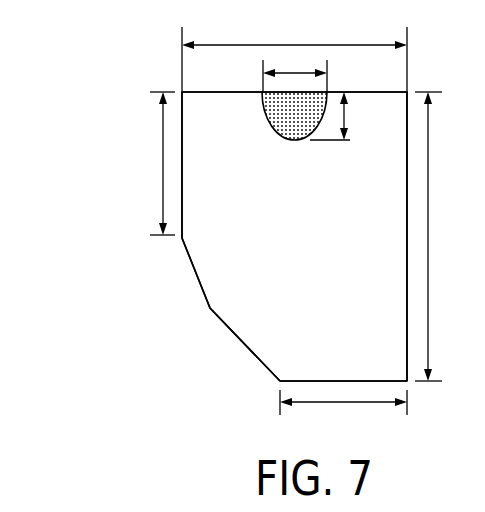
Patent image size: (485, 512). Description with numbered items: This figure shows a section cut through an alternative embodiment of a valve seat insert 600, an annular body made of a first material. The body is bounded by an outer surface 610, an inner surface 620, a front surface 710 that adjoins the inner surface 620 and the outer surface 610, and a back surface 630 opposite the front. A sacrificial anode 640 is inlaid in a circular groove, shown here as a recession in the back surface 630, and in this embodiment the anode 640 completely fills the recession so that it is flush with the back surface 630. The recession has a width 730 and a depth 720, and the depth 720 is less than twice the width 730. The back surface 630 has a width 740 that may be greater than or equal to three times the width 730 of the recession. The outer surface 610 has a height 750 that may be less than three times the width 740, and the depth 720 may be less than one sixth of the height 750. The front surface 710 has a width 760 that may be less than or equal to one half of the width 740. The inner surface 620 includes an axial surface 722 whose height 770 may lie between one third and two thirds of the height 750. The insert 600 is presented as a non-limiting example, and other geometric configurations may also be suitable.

The valve seat insert 600 is at (94, 152).
The outer surface 610 is at (397, 285).
The inner surface 620 is at (177, 312).
The back surface 630 is at (205, 102).
The sacrificial anode 640 is at (292, 127).
The front surface 710 is at (310, 371).
The depth 720 is at (344, 116).
The axial surface 722 is at (193, 207).
The width 730 is at (295, 72).
The width 740 is at (294, 58).
The height 750 is at (428, 263).
The width 760 is at (343, 412).
The height 770 is at (163, 182).